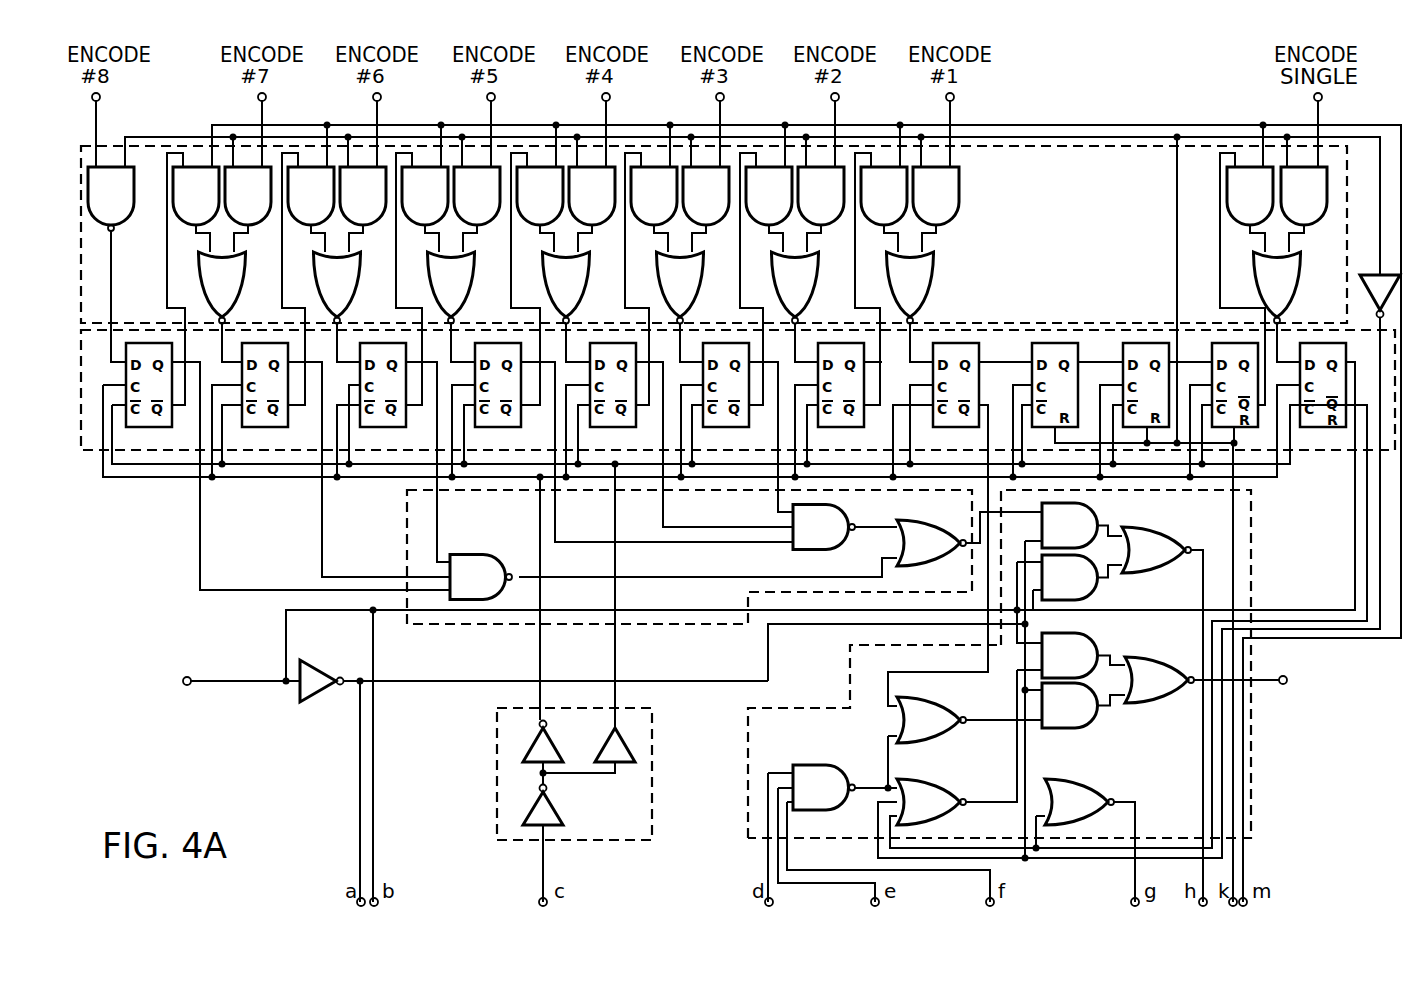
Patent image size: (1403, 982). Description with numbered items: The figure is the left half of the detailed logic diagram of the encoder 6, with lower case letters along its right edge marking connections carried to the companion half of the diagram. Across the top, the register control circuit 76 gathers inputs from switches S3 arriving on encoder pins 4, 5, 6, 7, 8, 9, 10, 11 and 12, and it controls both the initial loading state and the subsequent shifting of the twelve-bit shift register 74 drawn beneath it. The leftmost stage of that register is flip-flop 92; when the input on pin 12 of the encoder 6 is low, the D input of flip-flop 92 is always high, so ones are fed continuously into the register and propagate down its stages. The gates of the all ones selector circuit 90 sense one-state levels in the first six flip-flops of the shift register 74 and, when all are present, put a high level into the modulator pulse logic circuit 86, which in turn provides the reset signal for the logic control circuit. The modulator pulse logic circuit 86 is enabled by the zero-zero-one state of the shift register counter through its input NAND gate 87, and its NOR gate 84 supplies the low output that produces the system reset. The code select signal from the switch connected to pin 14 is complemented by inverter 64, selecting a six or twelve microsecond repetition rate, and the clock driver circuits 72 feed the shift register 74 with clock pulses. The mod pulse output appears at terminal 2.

The mod pulse output terminal 2 is at (1280, 678).
The decoder 4 is at (1334, 100).
The encode #1 input terminal 5 is at (966, 100).
The encoder 6 is at (1333, 814).
The encode #3 input terminal 7 is at (736, 100).
The encode #4 input terminal 8 is at (622, 100).
The encode #5 input terminal 9 is at (507, 100).
The encode #6 input terminal 10 is at (393, 100).
The encode #7 input terminal 11 is at (278, 100).
The encode #8 input terminal 12 is at (112, 100).
The code select input terminal 14 is at (190, 679).
The inverter 64 is at (314, 670).
The clock driver circuits 72 is at (497, 712).
The shift register 74 is at (1323, 452).
The register control circuit 76 is at (1077, 146).
The NOR gate 84 is at (1158, 530).
The modulator pulse logic circuit 86 is at (750, 708).
The input NAND gate 87 is at (824, 768).
The all ones selector circuit 90 is at (407, 497).
The flip-flop 92 is at (159, 397).